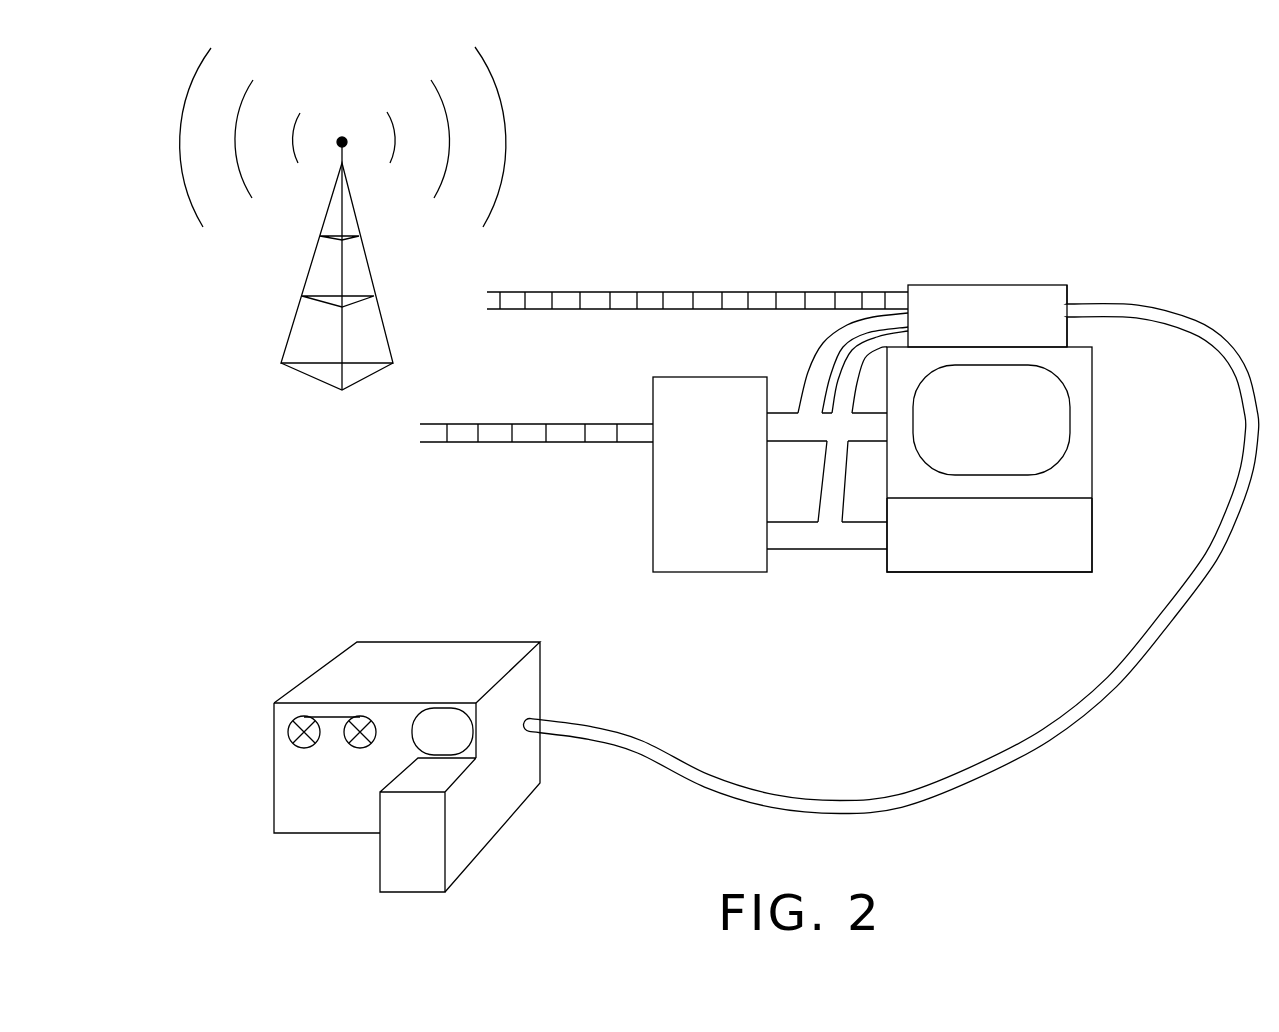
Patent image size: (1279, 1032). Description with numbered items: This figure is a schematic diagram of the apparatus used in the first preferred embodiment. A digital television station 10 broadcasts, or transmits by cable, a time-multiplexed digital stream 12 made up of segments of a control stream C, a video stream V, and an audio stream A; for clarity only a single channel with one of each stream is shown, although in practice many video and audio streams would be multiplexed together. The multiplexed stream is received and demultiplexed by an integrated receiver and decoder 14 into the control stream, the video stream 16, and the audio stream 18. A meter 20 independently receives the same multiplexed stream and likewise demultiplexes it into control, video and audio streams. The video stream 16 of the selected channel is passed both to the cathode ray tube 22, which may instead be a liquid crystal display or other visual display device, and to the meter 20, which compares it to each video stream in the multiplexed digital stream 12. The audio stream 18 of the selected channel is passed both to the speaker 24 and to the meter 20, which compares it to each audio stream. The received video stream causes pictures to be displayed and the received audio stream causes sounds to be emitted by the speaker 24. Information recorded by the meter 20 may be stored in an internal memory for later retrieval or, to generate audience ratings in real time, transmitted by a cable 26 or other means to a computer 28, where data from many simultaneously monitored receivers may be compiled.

The digital television station 10 is at (287, 332).
The time-multiplexed digital stream 12 is at (602, 310).
The integrated receiver and decoder 14 is at (653, 530).
The video stream 16 is at (813, 368).
The audio stream 18 is at (840, 550).
The meter 20 is at (997, 286).
The cathode ray tube 22 is at (1092, 418).
The speaker 24 is at (970, 573).
The cable 26 is at (1100, 713).
The computer 28 is at (518, 805).